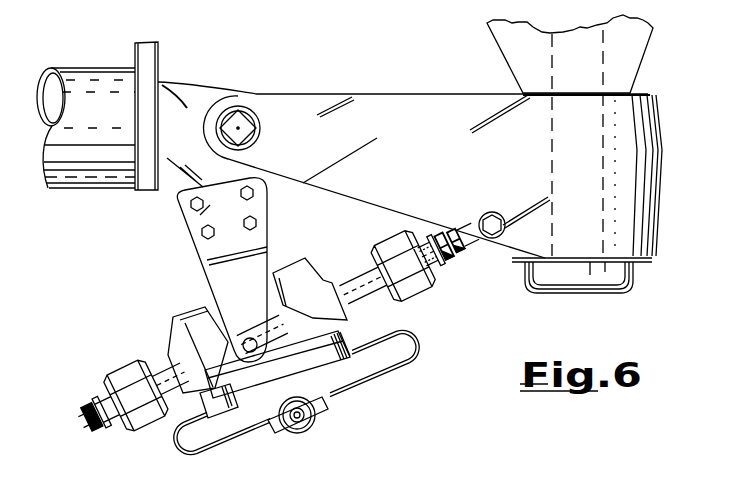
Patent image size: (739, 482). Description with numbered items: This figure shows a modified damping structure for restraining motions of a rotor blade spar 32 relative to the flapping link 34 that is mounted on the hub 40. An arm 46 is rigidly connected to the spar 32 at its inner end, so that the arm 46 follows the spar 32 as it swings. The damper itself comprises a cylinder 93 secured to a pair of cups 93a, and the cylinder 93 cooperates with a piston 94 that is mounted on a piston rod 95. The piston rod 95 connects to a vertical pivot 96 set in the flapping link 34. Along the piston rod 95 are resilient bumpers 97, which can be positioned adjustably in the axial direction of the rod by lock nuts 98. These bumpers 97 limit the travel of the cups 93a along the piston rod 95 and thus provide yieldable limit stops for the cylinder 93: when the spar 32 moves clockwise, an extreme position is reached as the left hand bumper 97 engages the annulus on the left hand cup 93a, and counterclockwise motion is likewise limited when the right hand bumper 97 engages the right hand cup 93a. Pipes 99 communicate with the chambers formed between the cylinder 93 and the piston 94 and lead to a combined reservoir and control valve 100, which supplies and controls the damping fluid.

The spar 32 is at (97, 172).
The flapping link 34 is at (393, 106).
The hub 40 is at (636, 56).
The arm 46 is at (205, 258).
The cylinder 93 is at (300, 370).
The cups 93a is at (300, 277).
The piston 94 is at (320, 386).
The piston rod 95 is at (152, 376).
The vertical pivot 96 is at (492, 238).
The resilient bumpers 97 is at (120, 370).
The lock nuts 98 is at (88, 400).
The pipes 99 is at (180, 452).
The combined reservoir and control valve 100 is at (306, 440).